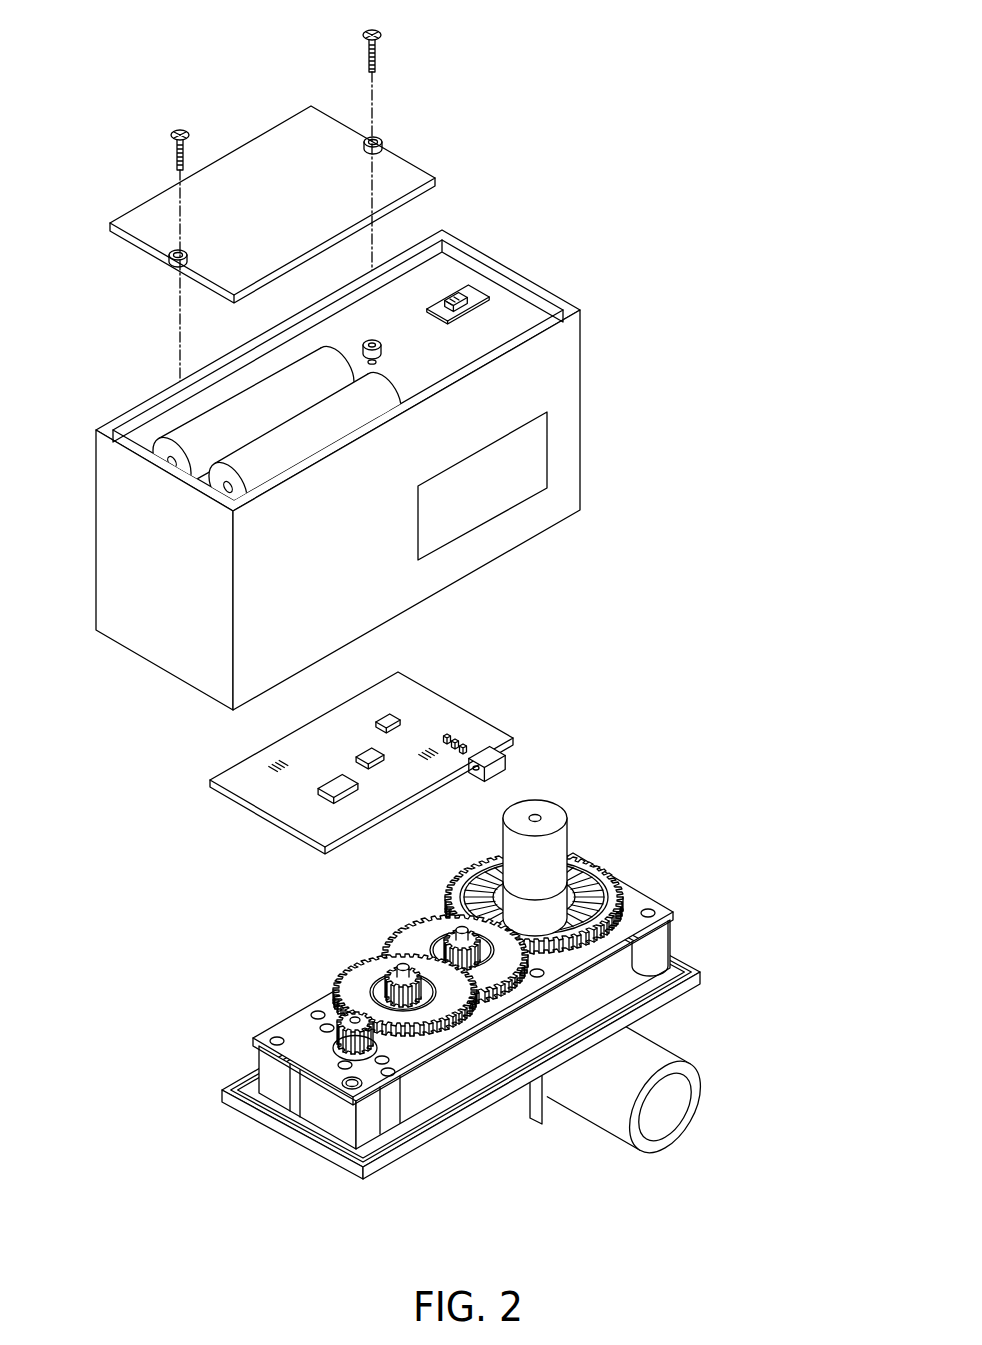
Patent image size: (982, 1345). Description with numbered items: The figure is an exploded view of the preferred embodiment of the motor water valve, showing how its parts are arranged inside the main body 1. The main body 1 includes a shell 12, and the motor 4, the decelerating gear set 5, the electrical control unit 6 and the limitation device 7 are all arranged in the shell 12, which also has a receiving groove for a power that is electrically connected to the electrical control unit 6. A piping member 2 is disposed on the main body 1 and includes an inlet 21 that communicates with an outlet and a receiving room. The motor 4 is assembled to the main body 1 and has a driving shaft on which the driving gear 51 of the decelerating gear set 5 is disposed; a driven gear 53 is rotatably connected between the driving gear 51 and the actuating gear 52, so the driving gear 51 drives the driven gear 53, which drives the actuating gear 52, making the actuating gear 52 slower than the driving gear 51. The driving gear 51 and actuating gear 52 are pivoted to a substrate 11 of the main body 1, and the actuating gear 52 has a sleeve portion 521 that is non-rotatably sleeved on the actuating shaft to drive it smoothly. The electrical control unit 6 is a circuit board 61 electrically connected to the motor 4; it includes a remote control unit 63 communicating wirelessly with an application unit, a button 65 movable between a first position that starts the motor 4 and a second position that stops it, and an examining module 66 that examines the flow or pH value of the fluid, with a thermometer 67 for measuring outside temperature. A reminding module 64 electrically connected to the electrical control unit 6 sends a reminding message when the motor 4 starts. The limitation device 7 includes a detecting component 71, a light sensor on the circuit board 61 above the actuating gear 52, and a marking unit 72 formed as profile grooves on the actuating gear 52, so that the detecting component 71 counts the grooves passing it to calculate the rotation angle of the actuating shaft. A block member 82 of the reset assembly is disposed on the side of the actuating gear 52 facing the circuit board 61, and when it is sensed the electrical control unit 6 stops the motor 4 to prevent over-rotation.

The main body 1 is at (400, 452).
The shell 12 is at (558, 348).
The reminding module 64 is at (510, 472).
The button 65 is at (465, 295).
The electrical control unit 6 is at (345, 774).
The circuit board 61 is at (243, 780).
The remote control unit 63 is at (340, 792).
The examining module 66 is at (373, 762).
The thermometer 67 is at (393, 710).
The detecting component 71 is at (493, 763).
The limitation device 7 is at (693, 784).
The marking unit 72 is at (567, 920).
The decelerating gear set 5 is at (504, 974).
The actuating gear 52 is at (516, 862).
The sleeve portion 521 is at (520, 848).
The driven gear 53 is at (363, 973).
The driving gear 51 is at (343, 1027).
The block member 82 is at (605, 899).
The substrate 11 is at (637, 888).
The motor 4 is at (387, 1108).
The piping member 2 is at (647, 1088).
The inlet 21 is at (663, 1107).